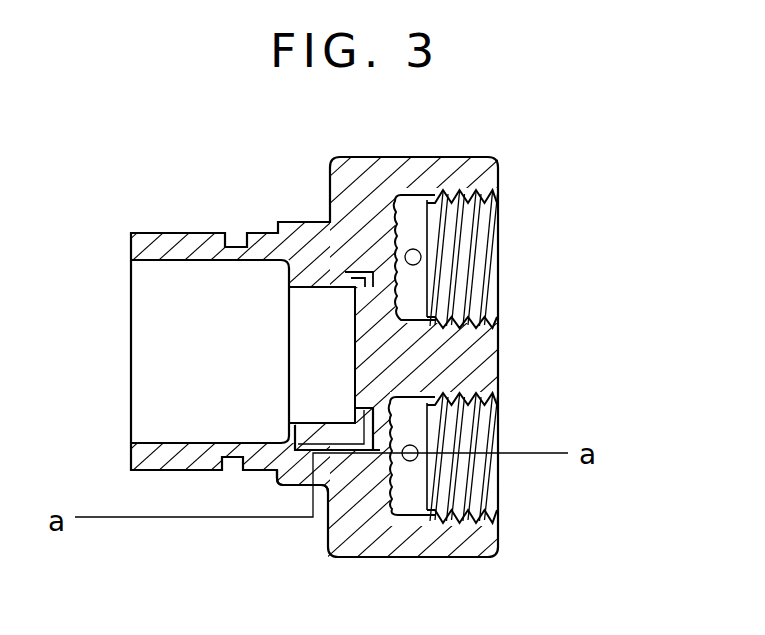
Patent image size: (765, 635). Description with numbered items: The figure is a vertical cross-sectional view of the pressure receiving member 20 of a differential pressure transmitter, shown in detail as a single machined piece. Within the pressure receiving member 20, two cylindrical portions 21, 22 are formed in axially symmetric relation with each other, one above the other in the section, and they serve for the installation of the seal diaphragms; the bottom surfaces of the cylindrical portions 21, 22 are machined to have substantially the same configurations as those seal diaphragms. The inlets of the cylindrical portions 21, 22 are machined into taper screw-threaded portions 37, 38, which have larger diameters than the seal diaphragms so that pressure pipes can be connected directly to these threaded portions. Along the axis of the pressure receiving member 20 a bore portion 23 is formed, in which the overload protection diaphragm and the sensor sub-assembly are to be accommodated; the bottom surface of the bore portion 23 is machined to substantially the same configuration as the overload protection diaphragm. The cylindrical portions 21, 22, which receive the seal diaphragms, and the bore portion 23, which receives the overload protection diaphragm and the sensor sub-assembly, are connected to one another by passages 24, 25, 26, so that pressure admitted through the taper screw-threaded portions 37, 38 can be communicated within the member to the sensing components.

The pressure receiving member 20 is at (400, 158).
The cylindrical portion 21 is at (480, 283).
The cylindrical portion 22 is at (480, 482).
The bore portion 23 is at (311, 330).
The passage 24 is at (367, 272).
The passage 25 is at (350, 435).
The passage 26 is at (296, 487).
The taper screw-threaded portion 37 is at (470, 190).
The taper screw-threaded portion 38 is at (470, 394).